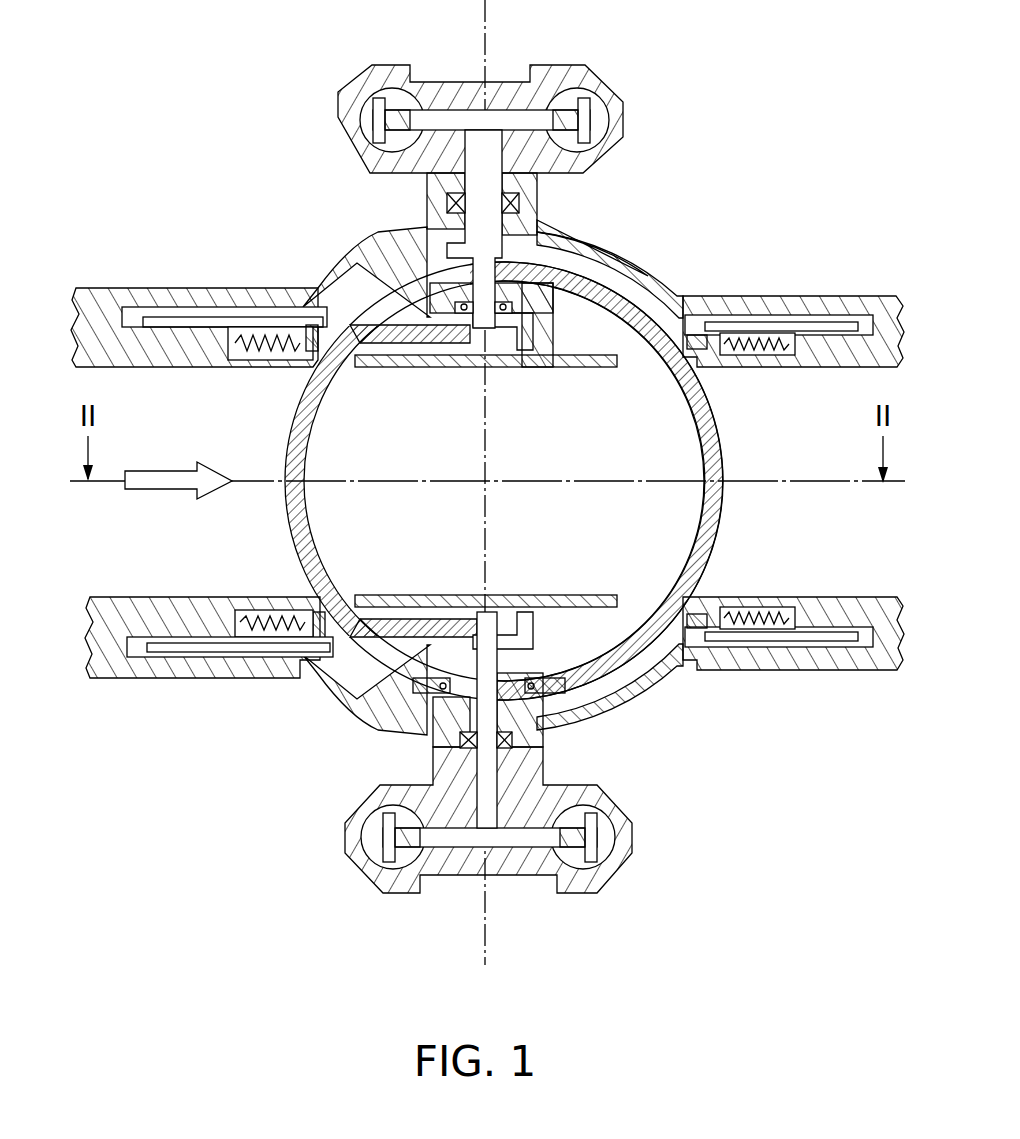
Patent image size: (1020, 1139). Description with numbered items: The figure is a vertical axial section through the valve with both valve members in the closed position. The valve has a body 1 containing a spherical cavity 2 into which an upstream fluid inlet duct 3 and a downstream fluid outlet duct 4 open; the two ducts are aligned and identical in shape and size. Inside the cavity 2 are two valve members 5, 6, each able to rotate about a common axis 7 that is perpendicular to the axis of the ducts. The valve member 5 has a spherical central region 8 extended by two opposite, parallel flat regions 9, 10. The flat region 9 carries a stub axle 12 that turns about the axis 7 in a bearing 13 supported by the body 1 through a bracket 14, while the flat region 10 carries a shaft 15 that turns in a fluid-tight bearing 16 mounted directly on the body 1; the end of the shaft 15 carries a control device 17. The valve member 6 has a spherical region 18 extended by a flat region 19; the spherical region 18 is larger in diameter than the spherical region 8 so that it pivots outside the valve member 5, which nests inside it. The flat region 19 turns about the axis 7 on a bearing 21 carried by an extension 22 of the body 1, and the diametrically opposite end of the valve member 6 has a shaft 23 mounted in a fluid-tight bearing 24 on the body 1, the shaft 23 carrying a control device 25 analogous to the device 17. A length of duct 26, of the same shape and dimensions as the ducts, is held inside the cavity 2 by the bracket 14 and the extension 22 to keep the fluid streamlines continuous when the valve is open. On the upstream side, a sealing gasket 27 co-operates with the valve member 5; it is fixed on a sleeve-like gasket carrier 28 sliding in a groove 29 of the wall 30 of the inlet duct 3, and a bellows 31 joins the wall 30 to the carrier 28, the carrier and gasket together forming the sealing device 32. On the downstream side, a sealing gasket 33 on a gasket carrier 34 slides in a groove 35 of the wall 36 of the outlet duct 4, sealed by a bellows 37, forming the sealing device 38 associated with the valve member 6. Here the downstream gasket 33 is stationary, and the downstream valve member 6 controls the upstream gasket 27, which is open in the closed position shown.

The body 1 is at (648, 272).
The spherical cavity 2 is at (529, 534).
The upstream fluid inlet duct 3 is at (156, 534).
The downstream fluid outlet duct 4 is at (809, 534).
The valve member 5 is at (284, 448).
The valve member 6 is at (730, 468).
The axis 7 is at (487, 487).
The spherical central region 8 is at (305, 472).
The flat region 9 is at (416, 346).
The flat region 10 is at (410, 617).
The stub axle 12 is at (478, 298).
The bearing 13 is at (462, 305).
The bracket 14 is at (566, 247).
The shaft 15 is at (472, 750).
The fluid-tight bearing 16 is at (438, 736).
The control device 17 is at (572, 847).
The spherical region 18 is at (704, 445).
The flat region 19 is at (565, 680).
The bearing 21 is at (548, 692).
The extension 22 is at (527, 702).
The shaft 23 is at (546, 172).
The fluid-tight bearing 24 is at (522, 203).
The control device 25 is at (455, 118).
The length of duct 26 is at (510, 357).
The sealing gasket 27 is at (318, 286).
The gasket carrier 28 is at (252, 316).
The groove 29 is at (133, 318).
The wall 30 is at (95, 305).
The bellows 31 is at (275, 360).
The sealing device 32 is at (276, 322).
The sealing gasket 33 is at (690, 296).
The gasket carrier 34 is at (792, 330).
The groove 35 is at (862, 328).
The wall 36 is at (870, 360).
The bellows 37 is at (752, 354).
The sealing device 38 is at (741, 316).